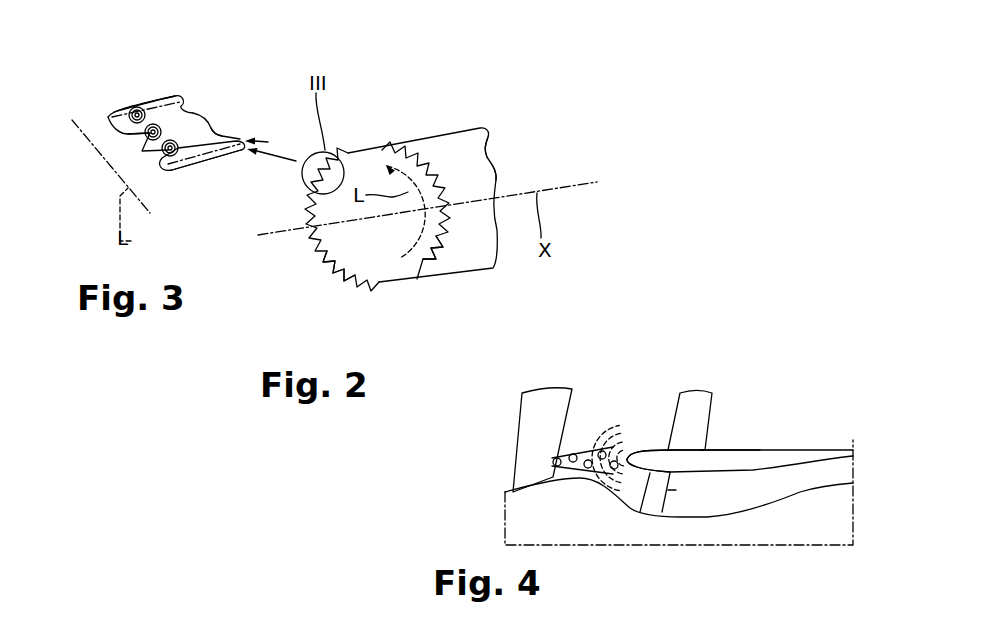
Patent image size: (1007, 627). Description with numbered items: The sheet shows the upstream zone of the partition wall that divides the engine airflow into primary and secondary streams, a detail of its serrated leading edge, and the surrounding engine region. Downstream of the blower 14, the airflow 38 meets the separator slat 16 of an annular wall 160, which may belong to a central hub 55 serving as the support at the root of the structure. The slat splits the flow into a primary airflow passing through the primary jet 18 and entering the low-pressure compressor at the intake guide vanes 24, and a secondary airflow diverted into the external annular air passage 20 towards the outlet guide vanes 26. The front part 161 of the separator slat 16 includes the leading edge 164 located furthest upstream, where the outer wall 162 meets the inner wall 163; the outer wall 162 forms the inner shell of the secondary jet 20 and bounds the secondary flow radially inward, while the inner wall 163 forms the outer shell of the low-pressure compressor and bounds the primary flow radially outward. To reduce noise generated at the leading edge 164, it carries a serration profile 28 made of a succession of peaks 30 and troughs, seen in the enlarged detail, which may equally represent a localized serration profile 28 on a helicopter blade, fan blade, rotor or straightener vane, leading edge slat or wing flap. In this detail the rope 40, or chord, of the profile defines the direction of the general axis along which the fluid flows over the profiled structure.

In FIG. 4, the blower 14 is at (537, 420).
In FIG. 2, the separator slat 16 is at (426, 272).
In FIG. 3, the separator slat 16 is at (127, 92).
In FIG. 4, the primary jet 18 is at (679, 497).
In FIG. 4, the external annular air passage 20 is at (740, 445).
In FIG. 4, the intake guide vanes 24 is at (672, 488).
In FIG. 4, the outlet guide vanes 26 is at (695, 410).
In FIG. 2, the serration profile 28 is at (298, 245).
In FIG. 3, the serration profile 28 is at (128, 136).
In FIG. 3, the peaks 30 is at (113, 116).
In FIG. 4, the airflow 38 is at (590, 447).
In FIG. 3, the rope 40 is at (230, 153).
In FIG. 2, the central hub 55 is at (485, 160).
In FIG. 4, the central hub 55 is at (767, 444).
In FIG. 2, the annular wall 160 is at (412, 142).
In FIG. 3, the annular wall 160 is at (195, 124).
In FIG. 4, the annular wall 160 is at (743, 460).
In FIG. 2, the front part 161 is at (440, 182).
In FIG. 3, the outer wall 162 is at (215, 130).
In FIG. 3, the inner wall 163 is at (192, 168).
In FIG. 2, the leading edge 164 is at (344, 284).
In FIG. 3, the leading edge 164 is at (152, 180).
In FIG. 4, the leading edge 164 is at (635, 440).